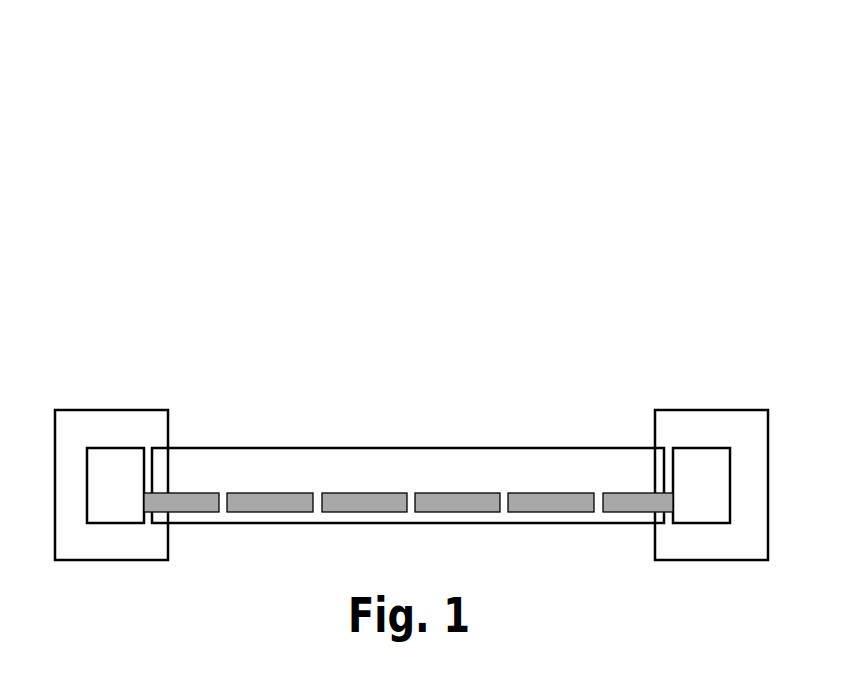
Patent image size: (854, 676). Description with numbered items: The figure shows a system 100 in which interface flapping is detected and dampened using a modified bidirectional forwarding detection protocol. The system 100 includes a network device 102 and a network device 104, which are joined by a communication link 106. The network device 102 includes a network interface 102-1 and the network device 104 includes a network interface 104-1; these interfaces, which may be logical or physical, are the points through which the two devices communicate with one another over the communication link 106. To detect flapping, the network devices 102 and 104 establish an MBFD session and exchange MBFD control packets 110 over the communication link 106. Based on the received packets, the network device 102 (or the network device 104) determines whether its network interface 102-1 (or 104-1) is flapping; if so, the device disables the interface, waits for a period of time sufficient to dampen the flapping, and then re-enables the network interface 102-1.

The system 100 is at (411, 118).
The network device 102 is at (147, 410).
The network interface 102-1 is at (117, 448).
The network device 104 is at (672, 410).
The network interface 104-1 is at (702, 448).
The communication link 106 is at (410, 447).
The MBFD control packets 110 is at (542, 492).